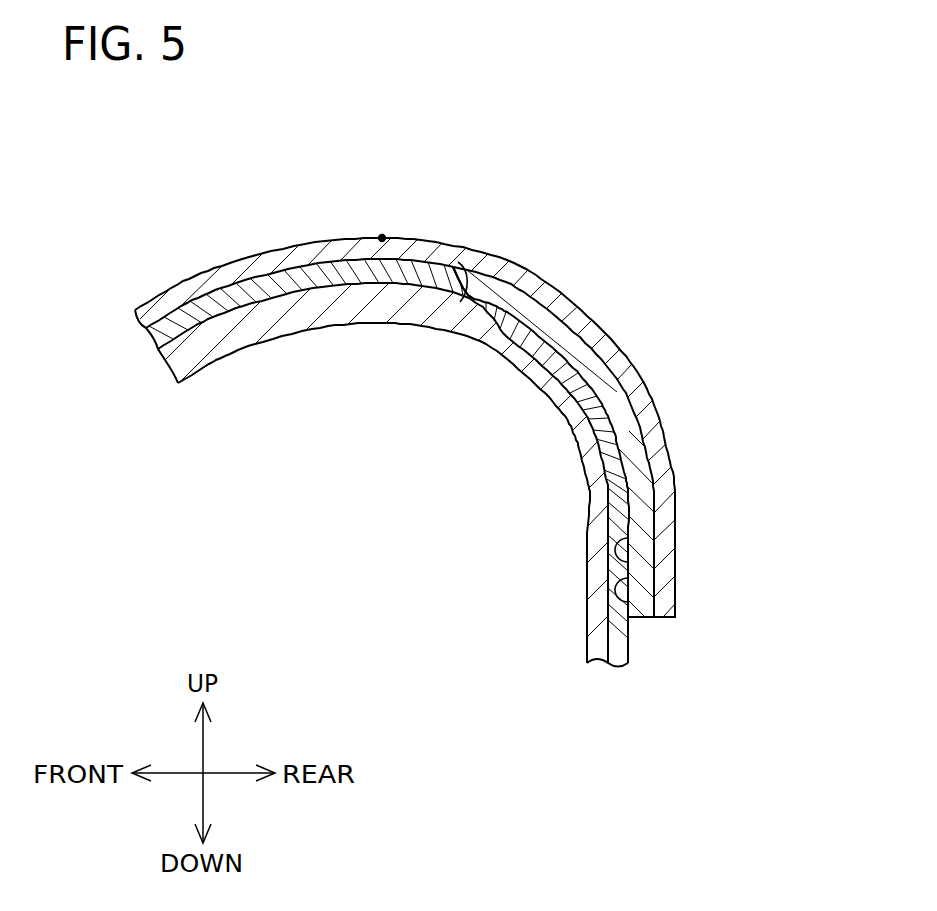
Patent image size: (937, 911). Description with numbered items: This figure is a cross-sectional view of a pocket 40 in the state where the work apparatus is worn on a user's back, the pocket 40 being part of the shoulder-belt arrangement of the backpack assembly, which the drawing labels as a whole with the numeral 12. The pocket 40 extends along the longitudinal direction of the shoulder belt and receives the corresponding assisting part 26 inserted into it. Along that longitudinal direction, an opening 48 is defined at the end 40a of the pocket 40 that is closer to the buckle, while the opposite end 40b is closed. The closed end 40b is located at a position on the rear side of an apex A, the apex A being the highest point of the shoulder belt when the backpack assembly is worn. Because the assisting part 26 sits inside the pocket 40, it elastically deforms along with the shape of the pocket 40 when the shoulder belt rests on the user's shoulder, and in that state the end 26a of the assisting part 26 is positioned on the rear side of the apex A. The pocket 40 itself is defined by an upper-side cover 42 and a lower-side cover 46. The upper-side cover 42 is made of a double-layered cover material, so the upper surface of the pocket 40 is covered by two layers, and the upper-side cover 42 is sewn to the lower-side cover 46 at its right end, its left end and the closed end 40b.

The vehicle pillar garnish assembly 12 is at (598, 196).
The assisting part 26 is at (605, 397).
The end of the assisting part 26a is at (458, 270).
The pocket 40 is at (472, 420).
The end of the pocket closer to the buckle 40a is at (630, 620).
The end of the pocket opposite to the buckle-side end 40b is at (413, 282).
The upper-side cover 42 is at (663, 517).
The lower-side cover 46 is at (597, 517).
The opening 48 is at (630, 612).
The apex A is at (382, 238).